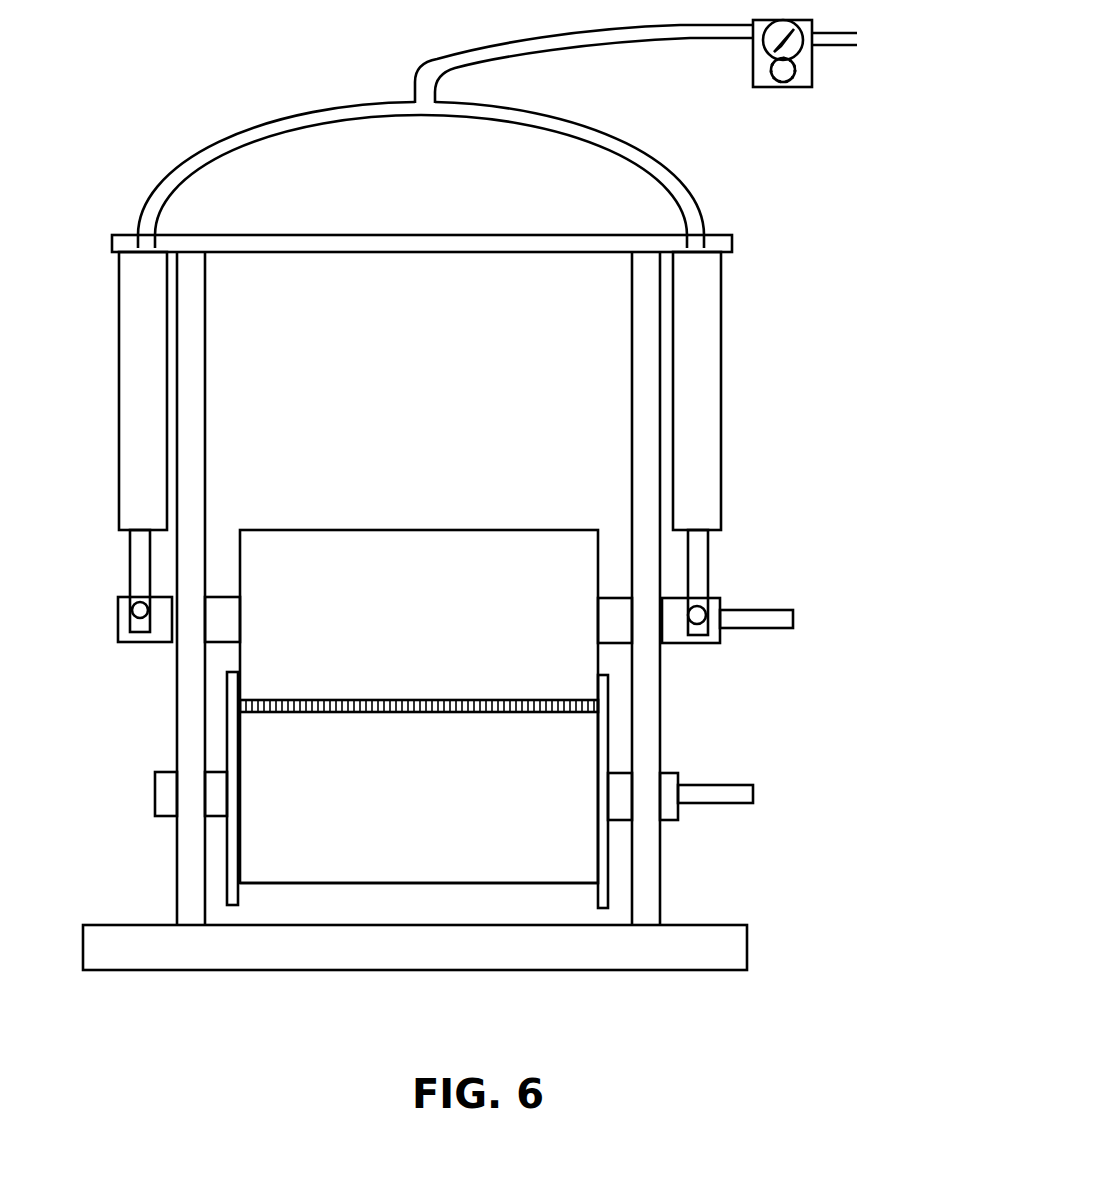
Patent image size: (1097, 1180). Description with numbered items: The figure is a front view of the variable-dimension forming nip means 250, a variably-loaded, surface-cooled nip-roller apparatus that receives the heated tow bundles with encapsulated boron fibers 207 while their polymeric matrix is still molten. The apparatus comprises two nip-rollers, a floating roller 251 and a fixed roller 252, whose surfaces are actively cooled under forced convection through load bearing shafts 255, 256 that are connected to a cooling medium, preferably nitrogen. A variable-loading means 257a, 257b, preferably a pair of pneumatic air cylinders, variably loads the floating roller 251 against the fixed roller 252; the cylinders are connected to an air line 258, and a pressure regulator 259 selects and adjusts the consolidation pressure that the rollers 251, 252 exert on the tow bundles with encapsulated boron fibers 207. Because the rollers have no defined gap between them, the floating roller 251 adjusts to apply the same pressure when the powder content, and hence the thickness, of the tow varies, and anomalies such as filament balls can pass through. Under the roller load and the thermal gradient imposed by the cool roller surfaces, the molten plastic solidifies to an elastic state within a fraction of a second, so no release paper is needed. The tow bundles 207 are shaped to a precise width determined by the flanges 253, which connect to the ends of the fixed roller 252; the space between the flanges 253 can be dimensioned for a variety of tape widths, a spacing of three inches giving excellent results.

The variable-dimension forming nip means 250 is at (491, 602).
The floating roller 251 is at (365, 528).
The fixed roller 252 is at (378, 885).
The heated tow bundles with encapsulated boron fibers 207 is at (480, 712).
The flanges 253 is at (226, 730).
The load bearing shaft 255 is at (795, 617).
The load bearing shaft 256 is at (755, 793).
The variable-loading means 257a is at (137, 445).
The variable-loading means 257b is at (693, 447).
The air line 258 is at (150, 193).
The pressure regulator 259 is at (786, 88).